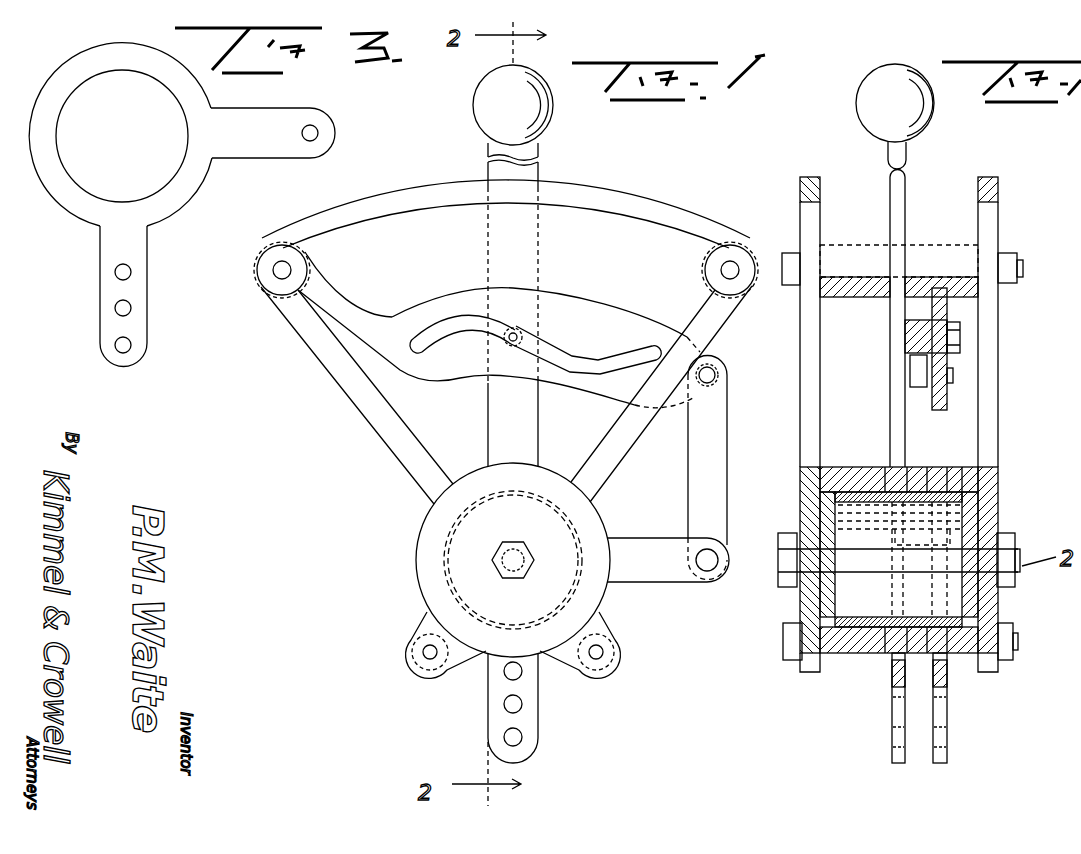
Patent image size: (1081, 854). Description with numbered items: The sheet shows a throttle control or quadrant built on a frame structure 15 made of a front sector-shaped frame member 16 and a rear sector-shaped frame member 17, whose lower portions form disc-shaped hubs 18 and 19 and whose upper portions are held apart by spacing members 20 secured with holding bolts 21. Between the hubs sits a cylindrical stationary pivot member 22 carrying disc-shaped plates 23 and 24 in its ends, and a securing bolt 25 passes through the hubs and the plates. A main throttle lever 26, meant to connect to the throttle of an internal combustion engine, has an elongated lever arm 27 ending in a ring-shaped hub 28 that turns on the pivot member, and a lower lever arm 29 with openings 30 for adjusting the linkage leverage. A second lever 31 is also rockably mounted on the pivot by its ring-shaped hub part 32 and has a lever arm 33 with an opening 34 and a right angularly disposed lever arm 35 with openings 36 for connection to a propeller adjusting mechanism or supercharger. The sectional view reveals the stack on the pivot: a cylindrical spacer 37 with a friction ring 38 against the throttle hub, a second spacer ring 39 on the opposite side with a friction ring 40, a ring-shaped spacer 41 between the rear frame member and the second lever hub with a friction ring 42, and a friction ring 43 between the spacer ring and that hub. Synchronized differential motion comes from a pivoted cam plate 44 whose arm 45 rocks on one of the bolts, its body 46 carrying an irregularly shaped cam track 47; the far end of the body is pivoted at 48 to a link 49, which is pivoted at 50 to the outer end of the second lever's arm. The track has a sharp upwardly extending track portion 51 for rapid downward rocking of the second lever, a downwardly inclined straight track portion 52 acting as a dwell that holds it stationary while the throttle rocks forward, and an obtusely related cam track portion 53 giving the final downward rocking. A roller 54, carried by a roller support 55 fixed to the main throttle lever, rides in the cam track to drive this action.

In FIG. 1, the frame structure 15 is at (620, 190).
In FIG. 2, the front sector-shaped frame member 16 is at (800, 398).
In FIG. 2, the rear sector-shaped frame member 17 is at (1000, 388).
In FIG. 1, the disc-shaped hub 18 is at (506, 482).
In FIG. 2, the disc-shaped hub 18 is at (800, 503).
In FIG. 2, the disc-shaped hub 19 is at (1000, 498).
In FIG. 2, the spacing members 20 is at (933, 252).
In FIG. 2, the holding bolts 21 is at (1020, 262).
In FIG. 2, the stationary pivot member 22 is at (852, 492).
In FIG. 2, the disc-shaped plate 23 is at (778, 555).
In FIG. 2, the disc-shaped plate 24 is at (985, 520).
In FIG. 1, the securing bolt 25 is at (535, 560).
In FIG. 1, the main throttle lever 26 is at (545, 181).
In FIG. 2, the main throttle lever 26 is at (914, 184).
In FIG. 2, the elongated lever arm 27 is at (888, 218).
In FIG. 2, the ring-shaped hub 28 is at (900, 468).
In FIG. 1, the lower lever arm 29 is at (513, 708).
In FIG. 2, the lower lever arm 29 is at (852, 709).
In FIG. 1, the openings 30 is at (507, 707).
In FIG. 2, the openings 30 is at (890, 668).
In FIG. 3, the second lever 31 is at (294, 142).
In FIG. 1, the second lever 31 is at (668, 568).
In FIG. 3, the ring-shaped hub part 32 is at (182, 190).
In FIG. 2, the ring-shaped hub part 32 is at (953, 733).
In FIG. 3, the lever arm 33 is at (268, 116).
In FIG. 1, the lever arm 33 is at (645, 548).
In FIG. 3, the opening 34 is at (320, 133).
In FIG. 3, the right angularly disposed lever arm 35 is at (137, 292).
In FIG. 2, the right angularly disposed lever arm 35 is at (948, 720).
In FIG. 3, the openings 36 is at (125, 348).
In FIG. 2, the cylindrical spacer 37 is at (850, 492).
In FIG. 2, the friction ring 38 is at (895, 534).
In FIG. 2, the second spacer ring 39 is at (925, 470).
In FIG. 2, the friction ring 40 is at (905, 470).
In FIG. 2, the ring-shaped spacer 41 is at (970, 470).
In FIG. 2, the friction ring 42 is at (945, 660).
In FIG. 2, the friction ring 43 is at (930, 655).
In FIG. 1, the pivoted cam plate 44 is at (499, 319).
In FIG. 1, the arm 45 is at (342, 293).
In FIG. 1, the body of the cam 46 is at (472, 297).
In FIG. 1, the cam track 47 is at (425, 355).
In FIG. 1, the pivot 48 is at (727, 380).
In FIG. 1, the link 49 is at (729, 414).
In FIG. 1, the pivot 50 is at (707, 566).
In FIG. 1, the upwardly extending track portion 51 is at (524, 356).
In FIG. 1, the downwardly inclined straight track portion 52 is at (540, 343).
In FIG. 1, the obtusely related cam track portion 53 is at (608, 353).
In FIG. 2, the roller 54 is at (930, 322).
In FIG. 2, the roller support 55 is at (915, 340).